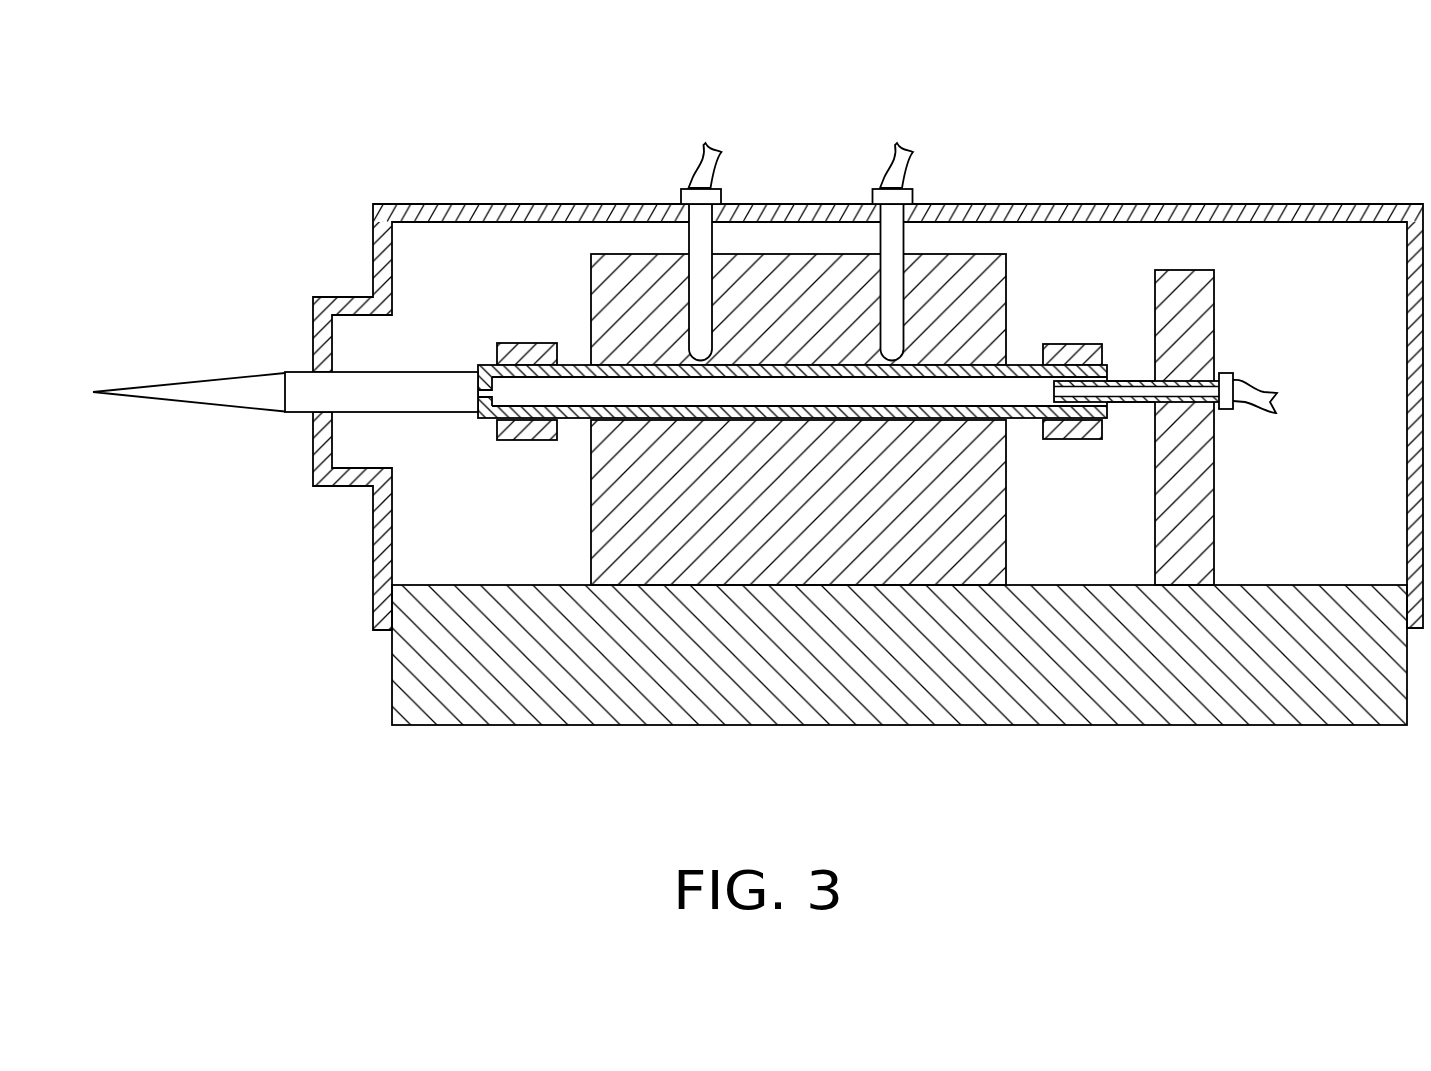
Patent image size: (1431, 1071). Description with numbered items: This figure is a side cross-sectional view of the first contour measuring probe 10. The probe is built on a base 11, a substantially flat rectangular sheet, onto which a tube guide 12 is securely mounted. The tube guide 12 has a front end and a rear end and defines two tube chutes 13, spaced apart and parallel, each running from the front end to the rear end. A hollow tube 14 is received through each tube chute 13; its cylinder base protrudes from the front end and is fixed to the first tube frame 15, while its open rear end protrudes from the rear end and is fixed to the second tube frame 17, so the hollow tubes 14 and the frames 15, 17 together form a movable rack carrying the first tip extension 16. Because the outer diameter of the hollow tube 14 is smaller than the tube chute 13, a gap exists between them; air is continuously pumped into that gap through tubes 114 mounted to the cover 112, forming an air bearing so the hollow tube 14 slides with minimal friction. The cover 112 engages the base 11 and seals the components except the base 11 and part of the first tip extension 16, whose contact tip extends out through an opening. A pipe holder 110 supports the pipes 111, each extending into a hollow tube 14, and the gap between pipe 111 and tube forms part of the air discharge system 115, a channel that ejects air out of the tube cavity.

The first contour measuring probe 10 is at (376, 146).
The base 11 is at (1319, 699).
The tube guide 12 is at (723, 520).
The tube chutes 13 is at (871, 414).
The hollow tubes 14 is at (948, 408).
The first tube frame 15 is at (550, 440).
The first tip extension 16 is at (370, 391).
The second tube frame 17 is at (1068, 353).
The pipe holder 110 is at (1183, 283).
The pipes 111 is at (1128, 403).
The cover 112 is at (620, 204).
The tubes 114 is at (697, 296).
The air discharge system 115 is at (461, 429).